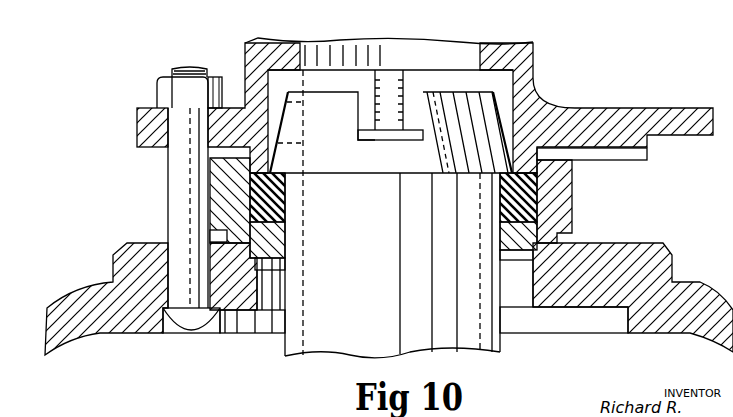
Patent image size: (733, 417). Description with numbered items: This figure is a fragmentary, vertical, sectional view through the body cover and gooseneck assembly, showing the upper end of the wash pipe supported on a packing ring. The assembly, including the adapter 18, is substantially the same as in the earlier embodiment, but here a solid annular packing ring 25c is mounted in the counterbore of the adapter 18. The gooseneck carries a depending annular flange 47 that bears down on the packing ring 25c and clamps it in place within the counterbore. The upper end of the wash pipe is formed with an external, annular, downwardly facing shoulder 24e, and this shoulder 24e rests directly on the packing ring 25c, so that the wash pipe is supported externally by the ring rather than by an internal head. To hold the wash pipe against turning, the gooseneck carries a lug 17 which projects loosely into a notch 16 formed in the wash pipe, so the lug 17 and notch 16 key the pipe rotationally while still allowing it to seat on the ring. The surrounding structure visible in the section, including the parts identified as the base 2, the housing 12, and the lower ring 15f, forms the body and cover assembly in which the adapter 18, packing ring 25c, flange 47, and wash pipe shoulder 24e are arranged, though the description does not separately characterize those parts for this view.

The base member 2 is at (73, 297).
The housing 12 is at (535, 42).
The flange ring 15f is at (502, 348).
The notch 16 is at (415, 115).
The lug 17 is at (388, 82).
The adapter 18 is at (563, 208).
The external annular downwardly facing shoulder 24e is at (372, 176).
The solid annular packing ring 25c is at (256, 198).
The depending annular flange 47 is at (540, 152).